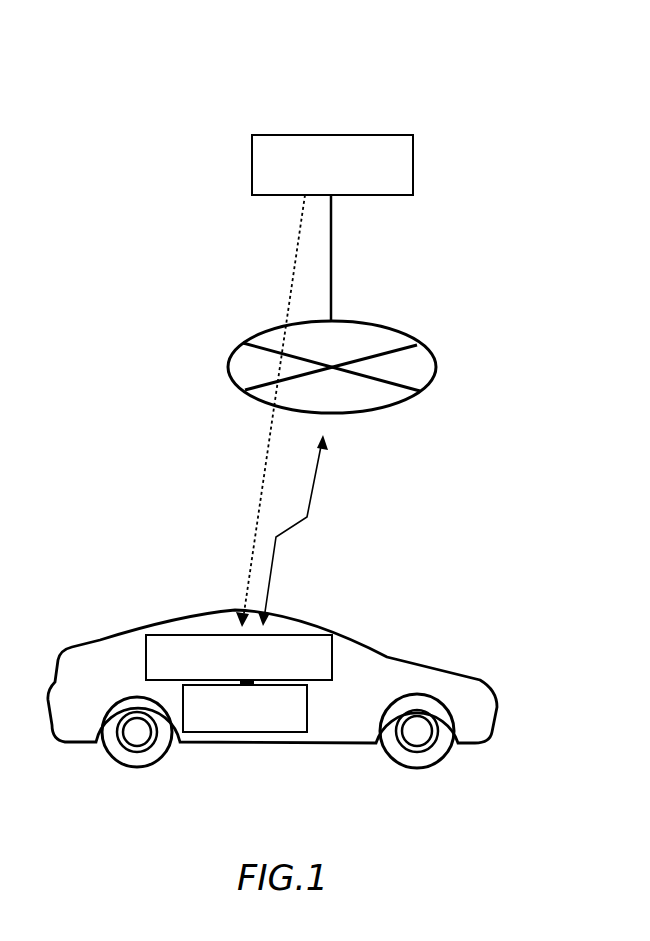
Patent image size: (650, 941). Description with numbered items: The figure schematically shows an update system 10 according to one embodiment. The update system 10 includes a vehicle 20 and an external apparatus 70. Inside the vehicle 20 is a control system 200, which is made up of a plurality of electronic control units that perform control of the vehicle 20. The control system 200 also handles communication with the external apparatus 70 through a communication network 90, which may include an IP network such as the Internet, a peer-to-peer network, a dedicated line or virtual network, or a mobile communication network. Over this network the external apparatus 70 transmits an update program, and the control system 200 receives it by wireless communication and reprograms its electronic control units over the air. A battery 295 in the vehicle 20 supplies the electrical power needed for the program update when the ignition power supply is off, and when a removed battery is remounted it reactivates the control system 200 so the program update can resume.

The update system 10 is at (480, 76).
The vehicle 20 is at (427, 665).
The external apparatus 70 is at (363, 135).
The communication network 90 is at (345, 321).
The control system 200 is at (292, 635).
The battery 295 is at (255, 732).